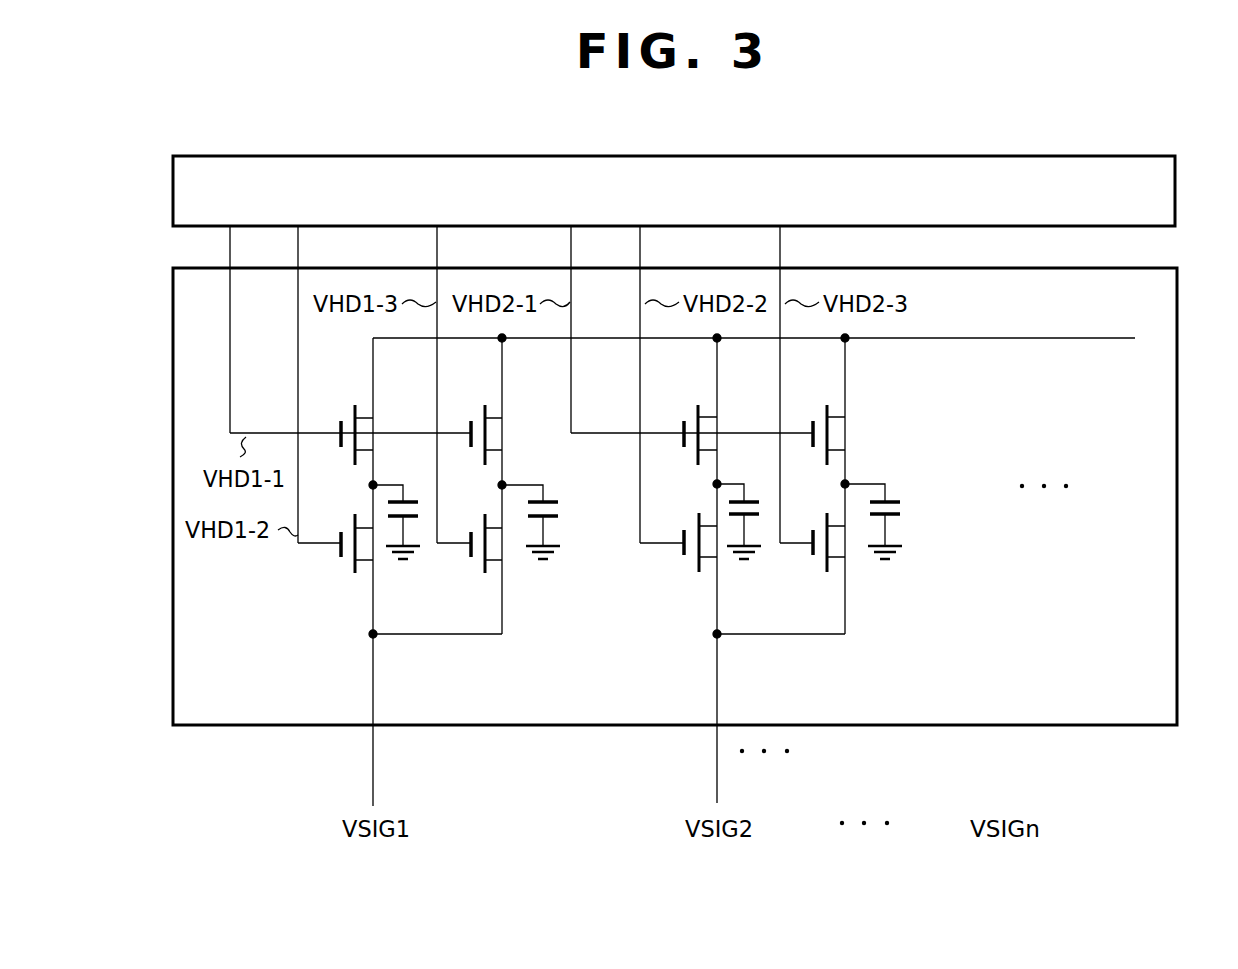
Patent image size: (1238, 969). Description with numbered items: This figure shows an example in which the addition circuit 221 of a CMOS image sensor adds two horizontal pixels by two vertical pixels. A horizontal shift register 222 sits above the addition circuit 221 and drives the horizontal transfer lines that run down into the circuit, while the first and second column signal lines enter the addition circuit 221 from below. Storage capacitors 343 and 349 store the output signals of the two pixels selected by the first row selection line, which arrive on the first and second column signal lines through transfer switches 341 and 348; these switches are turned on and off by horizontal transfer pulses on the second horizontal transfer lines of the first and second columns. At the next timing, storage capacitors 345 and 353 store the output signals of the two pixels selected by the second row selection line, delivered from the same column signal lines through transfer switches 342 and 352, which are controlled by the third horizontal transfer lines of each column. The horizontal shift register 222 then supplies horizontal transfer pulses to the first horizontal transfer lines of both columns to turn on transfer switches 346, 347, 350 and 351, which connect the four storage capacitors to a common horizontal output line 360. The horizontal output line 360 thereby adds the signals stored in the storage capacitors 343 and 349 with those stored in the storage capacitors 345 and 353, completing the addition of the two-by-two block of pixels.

The horizontal shift register 222 is at (1050, 153).
The addition circuit 221 is at (1122, 727).
The horizontal output line 360 is at (1067, 340).
The transfer switch 341 is at (346, 573).
The transfer switch 342 is at (476, 573).
The storage capacitor 343 is at (425, 507).
The storage capacitor 345 is at (582, 514).
The transfer switch 346 is at (346, 411).
The transfer switch 347 is at (536, 428).
The transfer switch 348 is at (688, 571).
The storage capacitor 349 is at (767, 507).
The transfer switch 350 is at (688, 411).
The transfer switch 351 is at (840, 432).
The transfer switch 352 is at (816, 571).
The storage capacitor 353 is at (905, 507).